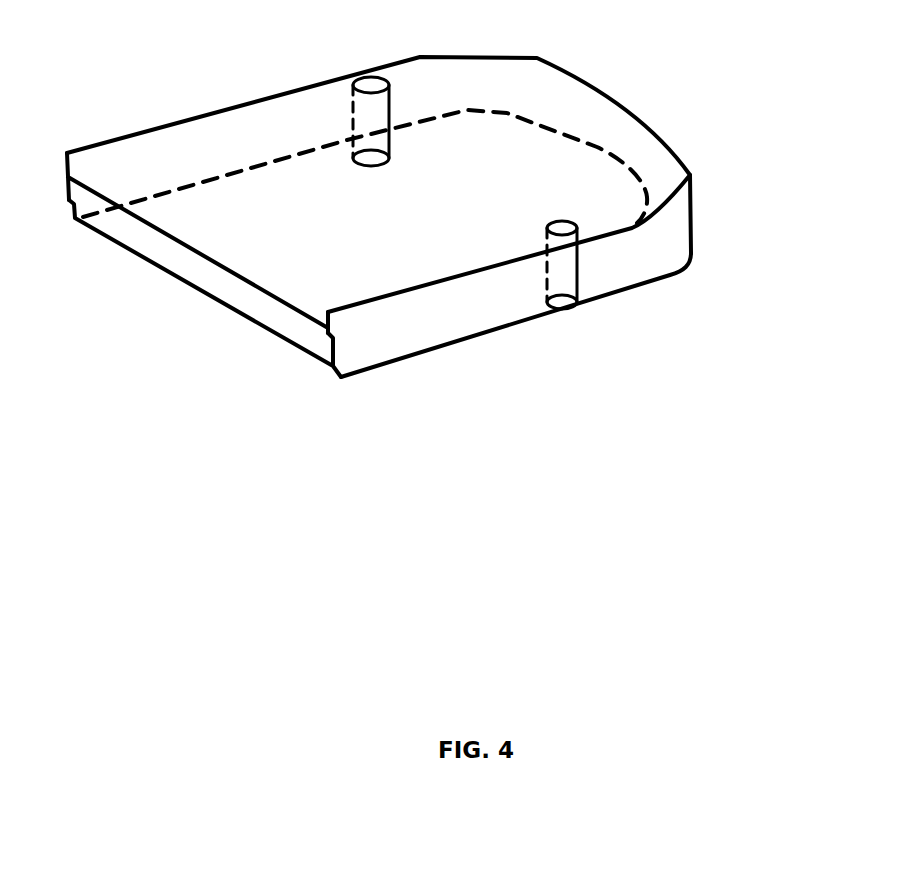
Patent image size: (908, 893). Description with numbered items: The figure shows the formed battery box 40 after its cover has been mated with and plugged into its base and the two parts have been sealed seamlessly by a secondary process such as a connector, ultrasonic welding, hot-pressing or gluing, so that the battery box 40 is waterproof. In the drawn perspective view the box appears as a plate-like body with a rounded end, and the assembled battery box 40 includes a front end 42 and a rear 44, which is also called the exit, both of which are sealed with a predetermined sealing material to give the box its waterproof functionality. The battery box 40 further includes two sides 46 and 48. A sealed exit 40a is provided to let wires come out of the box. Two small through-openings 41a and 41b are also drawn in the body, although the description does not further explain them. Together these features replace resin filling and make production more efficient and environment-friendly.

The battery box 40 is at (474, 340).
The sealed exit 40a is at (290, 323).
The first hole 41a is at (393, 140).
The second hole 41b is at (566, 275).
The front end 42 is at (227, 273).
The rear 44 is at (693, 197).
The side 46 is at (270, 122).
The side 48 is at (505, 323).